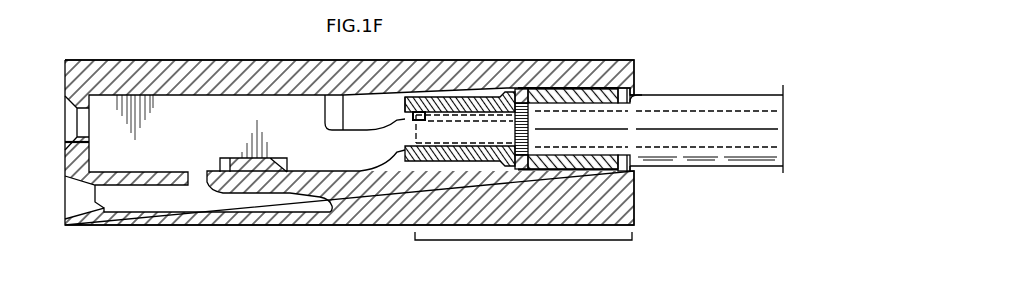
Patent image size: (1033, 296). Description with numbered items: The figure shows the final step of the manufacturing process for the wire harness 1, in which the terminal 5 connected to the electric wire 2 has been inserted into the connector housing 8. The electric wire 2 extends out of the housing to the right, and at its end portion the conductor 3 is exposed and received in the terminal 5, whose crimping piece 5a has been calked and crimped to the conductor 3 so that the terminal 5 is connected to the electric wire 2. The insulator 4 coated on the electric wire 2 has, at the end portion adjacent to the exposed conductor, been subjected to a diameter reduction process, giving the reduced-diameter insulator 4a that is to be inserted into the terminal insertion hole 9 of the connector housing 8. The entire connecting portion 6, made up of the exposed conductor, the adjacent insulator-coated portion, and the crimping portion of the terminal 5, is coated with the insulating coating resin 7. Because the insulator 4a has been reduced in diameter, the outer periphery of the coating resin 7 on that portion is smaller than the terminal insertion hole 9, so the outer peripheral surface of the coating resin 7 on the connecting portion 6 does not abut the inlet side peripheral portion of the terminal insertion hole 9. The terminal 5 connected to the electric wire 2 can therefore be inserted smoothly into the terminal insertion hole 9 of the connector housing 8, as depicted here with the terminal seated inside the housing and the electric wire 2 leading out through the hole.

The wire harness 1 is at (719, 82).
The electric wire 2 is at (780, 100).
The conductor 3 is at (520, 96).
The insulator 4 is at (688, 99).
The insulator 4a is at (573, 102).
The terminal 5 is at (210, 95).
The crimping piece 5a is at (472, 112).
The connecting portion 6 is at (523, 240).
The coating resin 7 is at (428, 99).
The connector housing 8 is at (88, 57).
The terminal insertion hole 9 is at (637, 96).